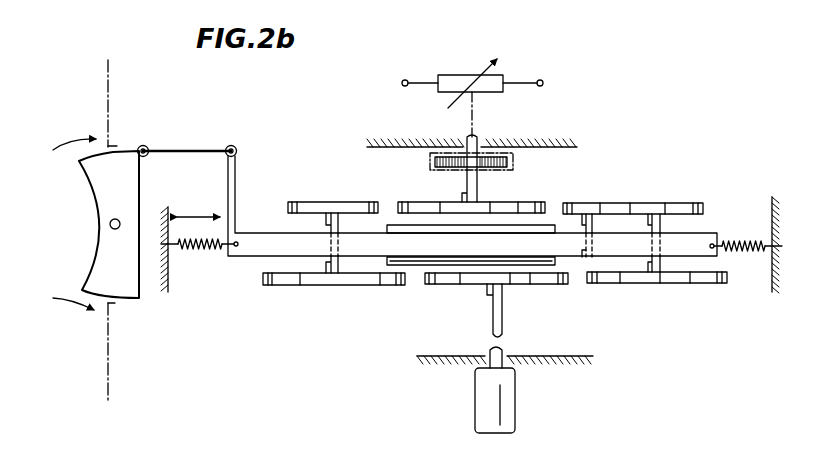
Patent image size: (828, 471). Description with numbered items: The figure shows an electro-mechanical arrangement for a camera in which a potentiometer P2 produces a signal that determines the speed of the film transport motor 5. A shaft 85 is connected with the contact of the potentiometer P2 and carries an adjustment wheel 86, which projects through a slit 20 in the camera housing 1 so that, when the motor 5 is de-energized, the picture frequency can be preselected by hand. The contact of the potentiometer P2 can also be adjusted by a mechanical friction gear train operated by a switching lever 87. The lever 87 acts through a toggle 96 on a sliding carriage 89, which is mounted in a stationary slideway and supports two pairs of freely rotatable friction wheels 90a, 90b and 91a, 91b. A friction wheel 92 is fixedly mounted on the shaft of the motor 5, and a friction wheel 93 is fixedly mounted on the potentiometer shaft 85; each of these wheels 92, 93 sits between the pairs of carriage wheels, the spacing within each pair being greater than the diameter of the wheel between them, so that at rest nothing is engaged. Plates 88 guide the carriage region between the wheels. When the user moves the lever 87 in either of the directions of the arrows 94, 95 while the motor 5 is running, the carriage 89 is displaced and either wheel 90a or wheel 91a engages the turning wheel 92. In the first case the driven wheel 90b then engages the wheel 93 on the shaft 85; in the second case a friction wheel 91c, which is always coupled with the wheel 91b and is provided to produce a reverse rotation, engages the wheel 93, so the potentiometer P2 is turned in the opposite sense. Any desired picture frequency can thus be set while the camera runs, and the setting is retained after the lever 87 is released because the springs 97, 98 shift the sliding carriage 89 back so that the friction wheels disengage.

The camera housing 1 is at (106, 80).
The arrow (direction of lever actuation) 94 is at (67, 136).
The arrow (direction of lever actuation) 95 is at (71, 317).
The switching lever 87 is at (117, 206).
The toggle 96 is at (176, 148).
The sliding carriage 89 is at (252, 240).
The spring 97 is at (200, 250).
The friction wheel 90a is at (300, 287).
The friction wheel 90b is at (298, 201).
The guide plates 88 is at (417, 264).
The friction wheel 93 is at (534, 203).
The friction wheel 92 is at (540, 286).
The shaft 85 is at (469, 185).
The adjustment wheel 86 is at (456, 156).
The slit 20 is at (430, 163).
The potentiometer P2 is at (458, 75).
The film transport motor 5 is at (492, 408).
The friction wheel 91a is at (700, 285).
The friction wheel 91b is at (687, 204).
The friction wheel 91c is at (597, 204).
The spring 98 is at (752, 252).